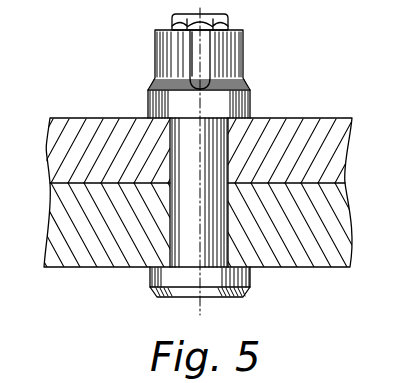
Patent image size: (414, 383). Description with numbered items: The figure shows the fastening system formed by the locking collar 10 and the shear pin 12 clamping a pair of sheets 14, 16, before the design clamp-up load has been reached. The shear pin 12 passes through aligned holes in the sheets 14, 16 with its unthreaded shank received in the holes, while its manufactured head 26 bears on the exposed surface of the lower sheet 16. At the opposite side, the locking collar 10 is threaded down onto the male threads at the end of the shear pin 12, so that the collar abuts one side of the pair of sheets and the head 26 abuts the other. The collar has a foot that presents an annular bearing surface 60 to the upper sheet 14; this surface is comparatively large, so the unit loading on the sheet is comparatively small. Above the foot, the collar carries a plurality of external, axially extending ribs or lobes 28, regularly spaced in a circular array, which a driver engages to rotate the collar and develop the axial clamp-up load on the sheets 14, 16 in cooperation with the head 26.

The locking collar 10 is at (195, 161).
The shear pin 12 is at (188, 291).
The sheet 14 is at (338, 144).
The sheet 16 is at (341, 228).
The manufactured head 26 is at (250, 277).
The ribs or lobes 28 is at (208, 59).
The annular bearing surface 60 is at (150, 112).